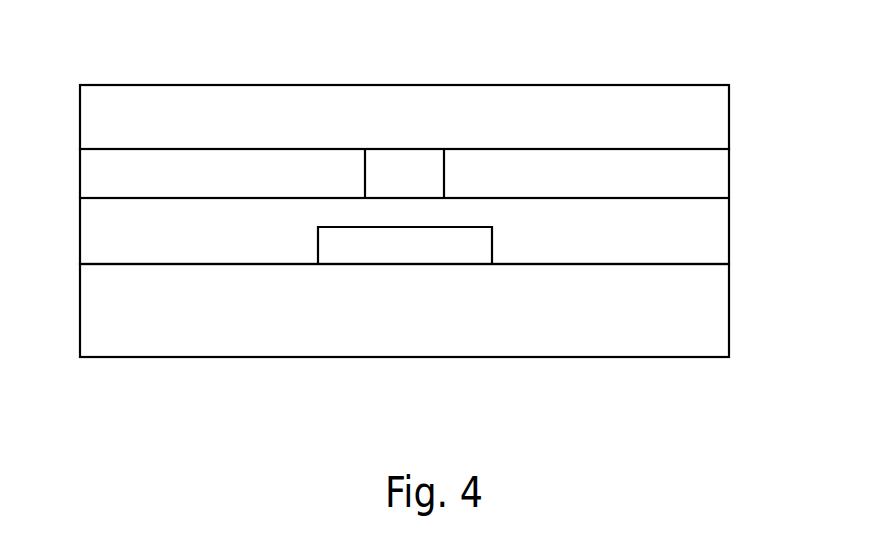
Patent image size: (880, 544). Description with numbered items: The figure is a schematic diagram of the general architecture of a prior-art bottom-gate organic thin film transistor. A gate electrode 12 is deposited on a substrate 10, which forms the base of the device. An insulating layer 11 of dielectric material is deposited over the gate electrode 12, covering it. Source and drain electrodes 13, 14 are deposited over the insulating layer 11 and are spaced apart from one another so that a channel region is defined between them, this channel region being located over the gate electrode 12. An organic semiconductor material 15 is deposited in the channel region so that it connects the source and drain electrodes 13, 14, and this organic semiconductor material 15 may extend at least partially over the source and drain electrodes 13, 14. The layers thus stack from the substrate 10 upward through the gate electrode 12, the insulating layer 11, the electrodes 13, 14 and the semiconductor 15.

The substrate 10 is at (122, 337).
The insulating layer 11 is at (100, 247).
The gate electrode 12 is at (397, 255).
The source electrode 13 is at (100, 188).
The drain electrode 14 is at (700, 187).
The organic semiconductor material 15 is at (222, 107).